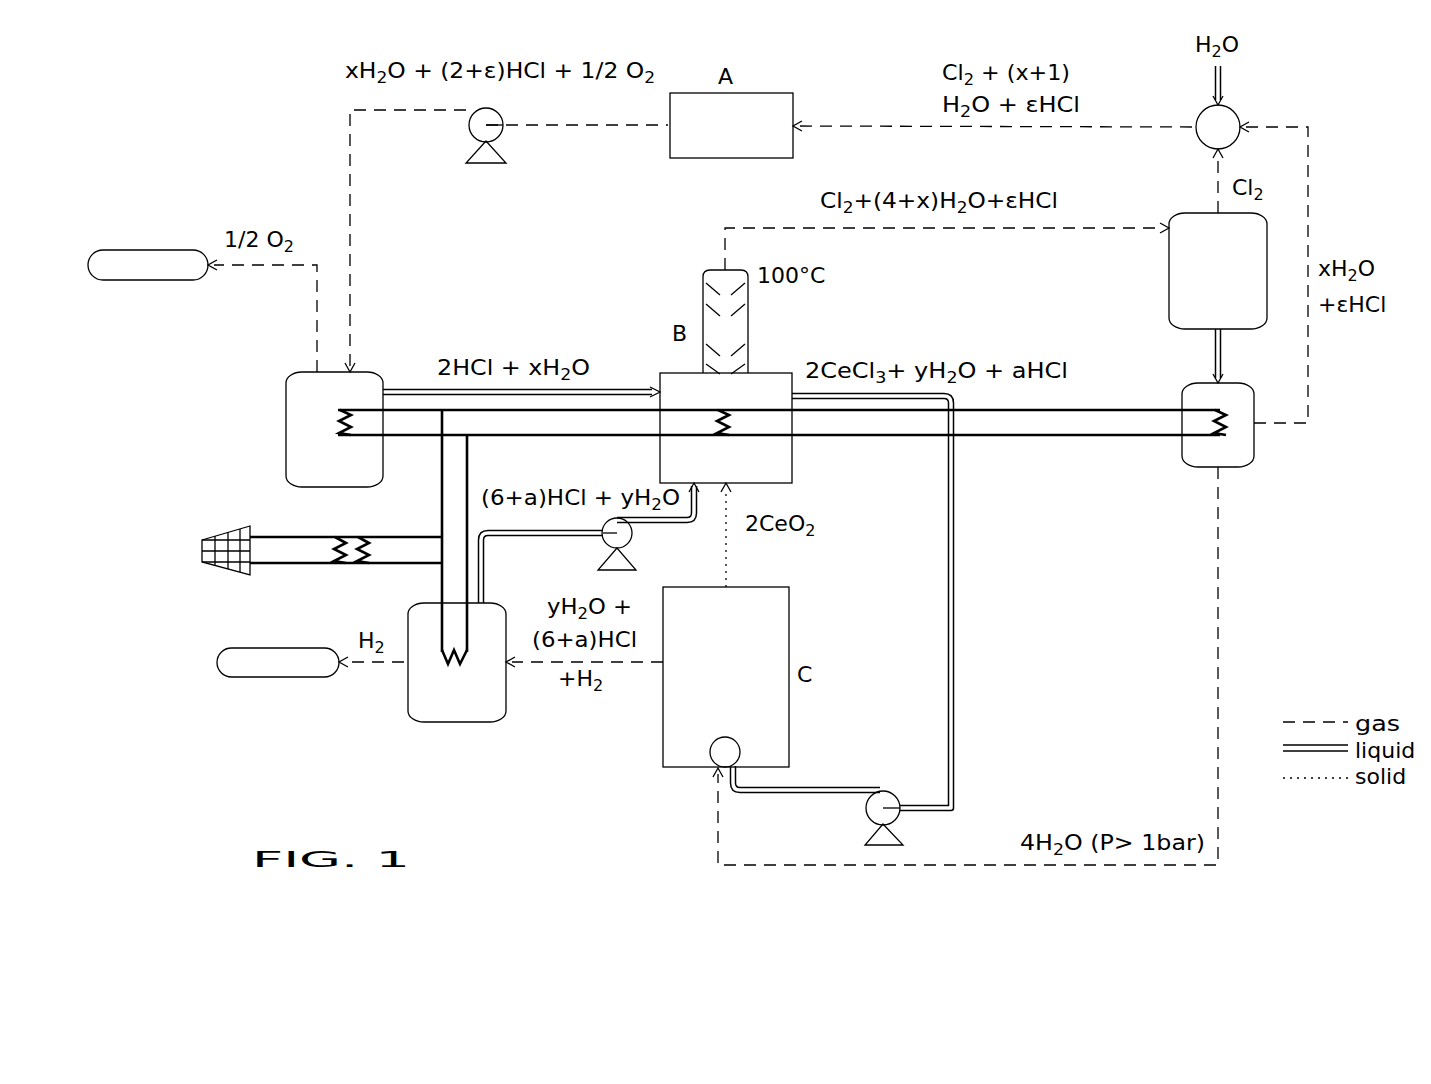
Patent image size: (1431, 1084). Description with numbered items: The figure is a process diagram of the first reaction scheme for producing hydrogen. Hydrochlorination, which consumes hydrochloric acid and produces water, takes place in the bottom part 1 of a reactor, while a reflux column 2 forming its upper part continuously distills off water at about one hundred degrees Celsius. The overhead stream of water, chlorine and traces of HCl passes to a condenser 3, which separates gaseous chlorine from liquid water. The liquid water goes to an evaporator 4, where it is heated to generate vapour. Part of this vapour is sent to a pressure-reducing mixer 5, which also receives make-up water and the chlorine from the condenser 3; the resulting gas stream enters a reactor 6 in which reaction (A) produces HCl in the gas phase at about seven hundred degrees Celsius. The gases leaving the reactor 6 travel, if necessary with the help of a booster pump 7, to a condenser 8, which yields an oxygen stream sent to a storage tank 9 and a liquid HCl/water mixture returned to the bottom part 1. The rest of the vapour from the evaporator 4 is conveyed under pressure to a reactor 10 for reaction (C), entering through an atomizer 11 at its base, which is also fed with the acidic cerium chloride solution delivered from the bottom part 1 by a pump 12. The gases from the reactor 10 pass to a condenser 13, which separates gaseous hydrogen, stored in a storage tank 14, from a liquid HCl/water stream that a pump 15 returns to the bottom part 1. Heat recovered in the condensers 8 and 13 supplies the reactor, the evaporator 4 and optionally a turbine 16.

The bottom part of the reactor 1 is at (726, 428).
The reflux column 2 is at (725, 322).
The condenser 3 is at (1218, 271).
The evaporator 4 is at (1237, 425).
The pressure-reducing mixer 5 is at (1218, 127).
The reactor 6 is at (731, 125).
The booster pump 7 is at (500, 125).
The condenser 8 is at (334, 429).
The storage tank 9 is at (148, 251).
The reactor 10 is at (726, 677).
The atomizer 11 is at (702, 773).
The pump 12 is at (880, 804).
The condenser 13 is at (457, 662).
The storage tank 14 is at (278, 647).
The pump 15 is at (641, 544).
The turbine 16 is at (220, 537).